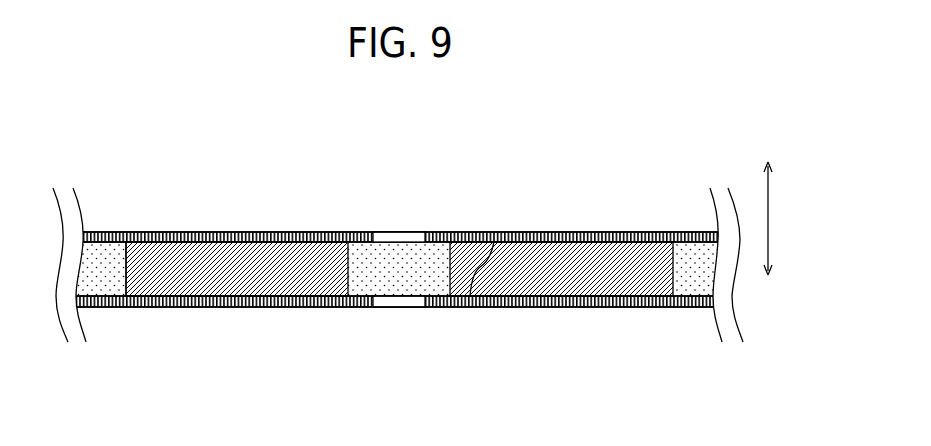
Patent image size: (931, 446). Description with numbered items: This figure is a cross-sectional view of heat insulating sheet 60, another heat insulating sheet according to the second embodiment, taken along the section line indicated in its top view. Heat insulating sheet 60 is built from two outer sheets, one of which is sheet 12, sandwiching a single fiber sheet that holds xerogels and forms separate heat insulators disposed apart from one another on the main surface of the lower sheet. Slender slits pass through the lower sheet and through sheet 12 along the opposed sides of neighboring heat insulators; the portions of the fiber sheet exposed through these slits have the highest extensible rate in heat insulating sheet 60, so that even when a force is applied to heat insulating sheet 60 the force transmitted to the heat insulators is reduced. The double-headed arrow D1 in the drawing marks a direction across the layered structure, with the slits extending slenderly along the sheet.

The heat insulating sheet 60 is at (603, 184).
The sheet 12 is at (124, 238).
The thickness direction D1 is at (767, 237).